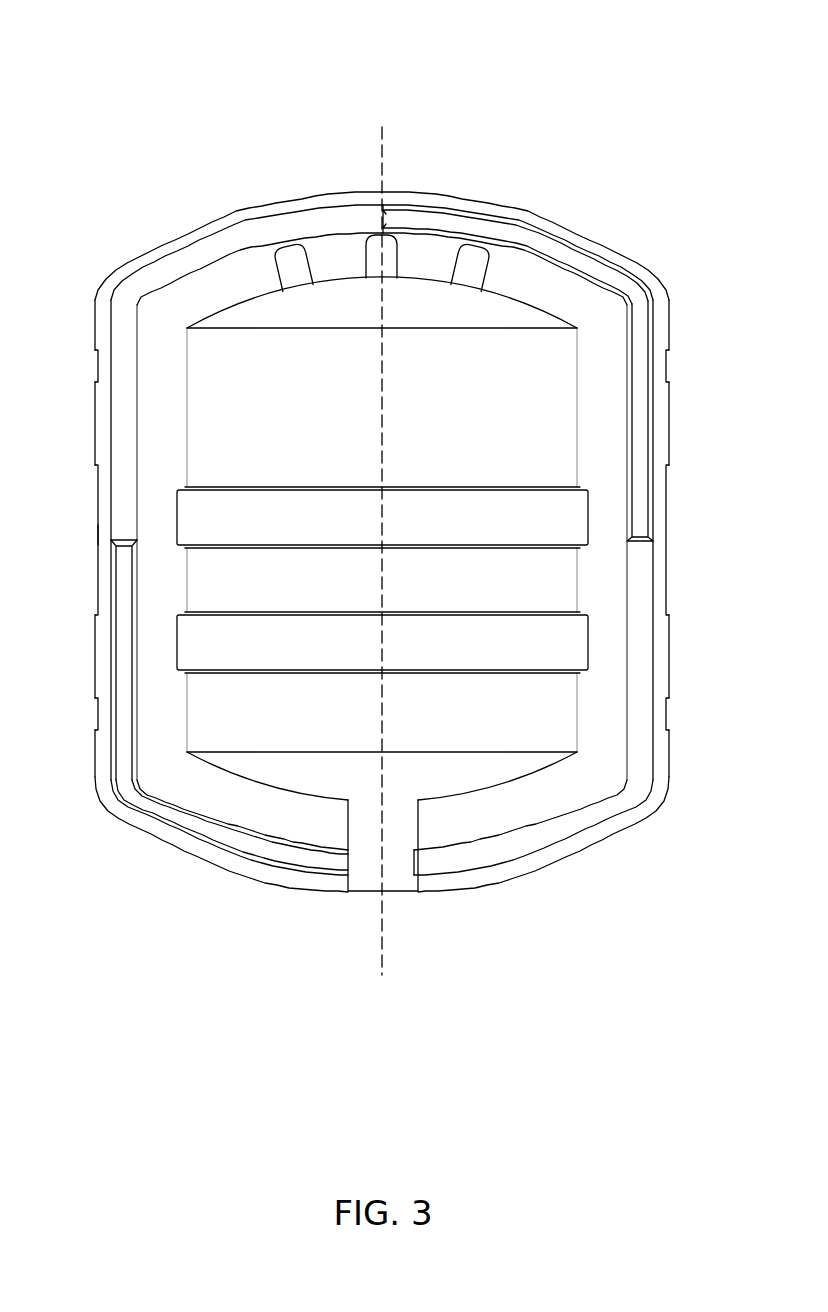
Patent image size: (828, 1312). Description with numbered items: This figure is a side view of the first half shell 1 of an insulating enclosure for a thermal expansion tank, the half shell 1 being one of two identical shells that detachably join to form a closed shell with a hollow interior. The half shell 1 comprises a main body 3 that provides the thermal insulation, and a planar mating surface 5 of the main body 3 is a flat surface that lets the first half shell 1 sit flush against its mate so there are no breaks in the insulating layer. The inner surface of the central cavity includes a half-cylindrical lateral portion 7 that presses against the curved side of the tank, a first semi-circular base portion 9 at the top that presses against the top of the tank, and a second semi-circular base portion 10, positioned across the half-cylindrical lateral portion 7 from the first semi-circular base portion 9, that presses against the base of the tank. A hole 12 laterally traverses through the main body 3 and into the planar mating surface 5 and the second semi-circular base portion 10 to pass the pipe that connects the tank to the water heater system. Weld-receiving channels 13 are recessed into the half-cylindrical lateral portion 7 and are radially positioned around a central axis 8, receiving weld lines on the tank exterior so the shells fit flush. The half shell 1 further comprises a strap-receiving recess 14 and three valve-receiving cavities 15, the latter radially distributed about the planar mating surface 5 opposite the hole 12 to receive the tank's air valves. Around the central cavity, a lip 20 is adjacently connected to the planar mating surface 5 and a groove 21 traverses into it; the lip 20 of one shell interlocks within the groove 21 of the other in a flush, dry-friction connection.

The first half shell 1 is at (408, 95).
The main body 3 is at (604, 246).
The planar mating surface 5 is at (166, 560).
The half-cylindrical lateral portion 7 is at (411, 590).
The central axis 8 is at (382, 152).
The upper core head 9 is at (326, 322).
The second semi-circular base portion 10 is at (364, 784).
The hole 12 is at (386, 905).
The weld-receiving channel 13 is at (362, 533).
The strap-receiving recess 14 is at (87, 367).
The valve-receiving cavity 15 is at (376, 291).
The lip 20 is at (118, 647).
The groove 21 is at (117, 485).